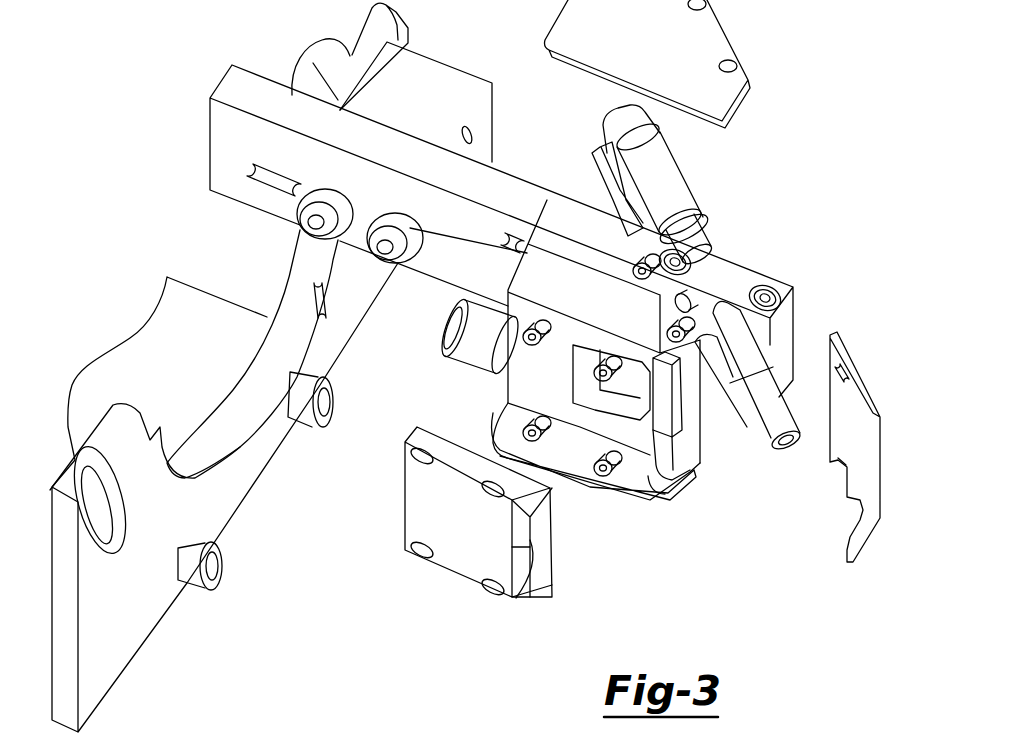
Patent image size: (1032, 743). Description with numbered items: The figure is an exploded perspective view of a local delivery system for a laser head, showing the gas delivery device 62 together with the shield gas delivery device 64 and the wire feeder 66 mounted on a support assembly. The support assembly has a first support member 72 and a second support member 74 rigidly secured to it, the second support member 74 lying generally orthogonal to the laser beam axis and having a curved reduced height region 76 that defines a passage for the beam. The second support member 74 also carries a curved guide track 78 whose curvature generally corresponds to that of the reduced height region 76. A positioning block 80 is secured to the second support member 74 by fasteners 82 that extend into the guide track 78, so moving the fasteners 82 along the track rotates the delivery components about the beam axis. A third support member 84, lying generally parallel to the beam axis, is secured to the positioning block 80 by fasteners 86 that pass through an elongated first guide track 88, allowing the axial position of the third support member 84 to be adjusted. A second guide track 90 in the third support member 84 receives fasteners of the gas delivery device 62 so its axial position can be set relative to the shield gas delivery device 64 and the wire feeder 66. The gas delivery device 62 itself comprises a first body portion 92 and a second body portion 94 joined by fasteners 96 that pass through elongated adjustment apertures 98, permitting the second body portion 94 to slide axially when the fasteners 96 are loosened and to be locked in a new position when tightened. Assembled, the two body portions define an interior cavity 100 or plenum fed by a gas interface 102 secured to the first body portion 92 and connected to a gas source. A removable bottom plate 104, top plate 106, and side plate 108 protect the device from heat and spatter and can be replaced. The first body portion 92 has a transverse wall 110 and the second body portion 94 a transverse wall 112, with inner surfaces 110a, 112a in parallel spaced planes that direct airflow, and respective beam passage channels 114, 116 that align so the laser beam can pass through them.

The gas delivery device 62 is at (731, 551).
The shield gas delivery device 64 is at (780, 417).
The wire feeder 66 is at (757, 433).
The first support member 72 is at (133, 352).
The second support member 74 is at (213, 510).
The reduced height region 76 is at (210, 440).
The guide track 78 is at (330, 276).
The positioning block 80 is at (447, 85).
The fasteners 82 is at (293, 62).
The third support member 84 is at (512, 183).
The fasteners 86 is at (300, 218).
The first guide track 88 is at (452, 247).
The second guide track 90 is at (533, 228).
The first body portion 92 is at (570, 266).
The second body portion 94 is at (437, 507).
The fasteners 96 is at (535, 322).
The elongated adjustment apertures 98 is at (420, 558).
The interior cavity 100 is at (523, 394).
The gas interface 102 is at (467, 363).
The bottom plate 104 is at (613, 498).
The top plate 106 is at (700, 36).
The side plate 108 is at (866, 392).
The wall 110 is at (667, 495).
The inner surface 110a is at (650, 492).
The wall 112 is at (517, 608).
The inner surface 112a is at (545, 547).
The beam passage channel 114 is at (675, 472).
The beam passage channel 116 is at (555, 585).